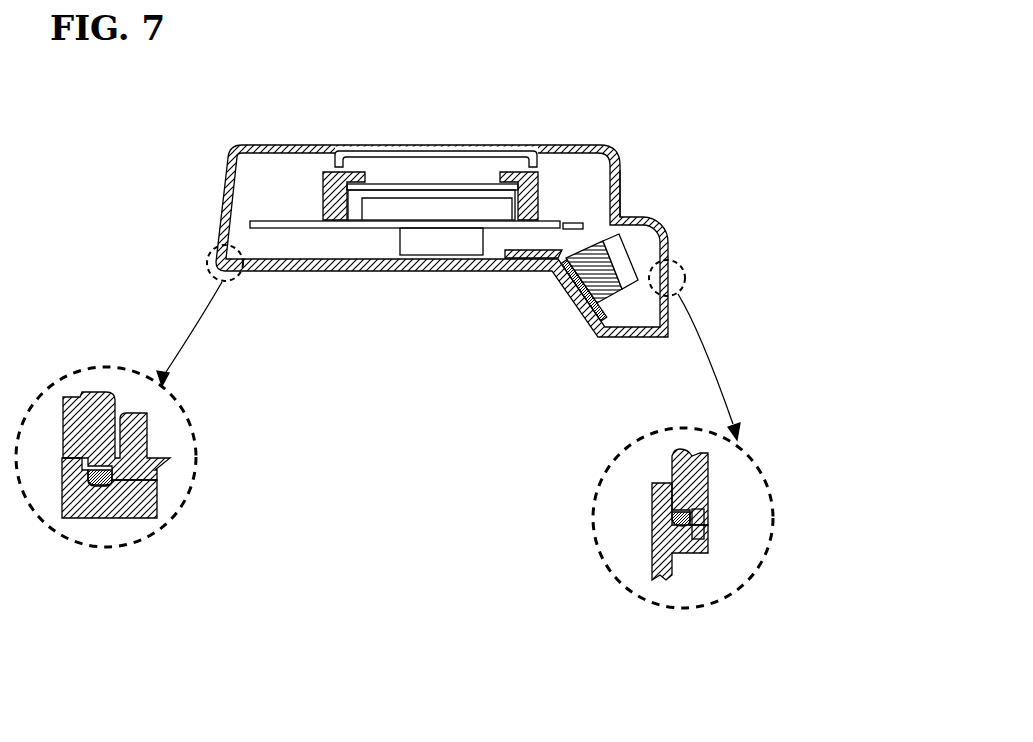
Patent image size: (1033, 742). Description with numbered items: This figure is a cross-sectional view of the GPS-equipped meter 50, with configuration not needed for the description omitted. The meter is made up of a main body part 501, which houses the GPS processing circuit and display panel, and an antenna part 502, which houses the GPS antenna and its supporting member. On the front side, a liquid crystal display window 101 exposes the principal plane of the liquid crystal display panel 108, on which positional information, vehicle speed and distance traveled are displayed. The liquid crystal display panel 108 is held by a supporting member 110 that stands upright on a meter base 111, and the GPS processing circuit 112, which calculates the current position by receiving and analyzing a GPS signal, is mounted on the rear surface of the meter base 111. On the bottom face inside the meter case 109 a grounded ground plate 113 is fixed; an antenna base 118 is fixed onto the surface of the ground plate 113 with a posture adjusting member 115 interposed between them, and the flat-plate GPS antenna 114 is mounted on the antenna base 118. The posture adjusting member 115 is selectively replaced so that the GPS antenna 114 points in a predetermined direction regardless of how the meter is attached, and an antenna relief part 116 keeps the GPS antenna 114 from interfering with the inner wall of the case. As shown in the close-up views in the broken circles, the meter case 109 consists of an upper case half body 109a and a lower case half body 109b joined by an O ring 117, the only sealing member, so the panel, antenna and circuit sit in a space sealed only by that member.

The GPS-equipped meter 50 is at (620, 144).
The main body part 501 is at (575, 147).
The antenna part 502 is at (638, 216).
The supporting member 110 is at (508, 197).
The liquid crystal display window 101 is at (413, 147).
The liquid crystal display panel 108 is at (458, 186).
The meter base 111 is at (303, 228).
The GPS processing circuit 112 is at (407, 247).
The ground plate 113 is at (517, 271).
The GPS antenna 114 is at (632, 270).
The posture adjusting member 115 is at (616, 308).
The antenna relief part 116 is at (621, 262).
The O ring 117 is at (112, 478).
The antenna base 118 is at (620, 188).
The meter case 109 is at (784, 246).
The upper case half body 109a is at (670, 254).
The lower case half body 109b is at (680, 296).